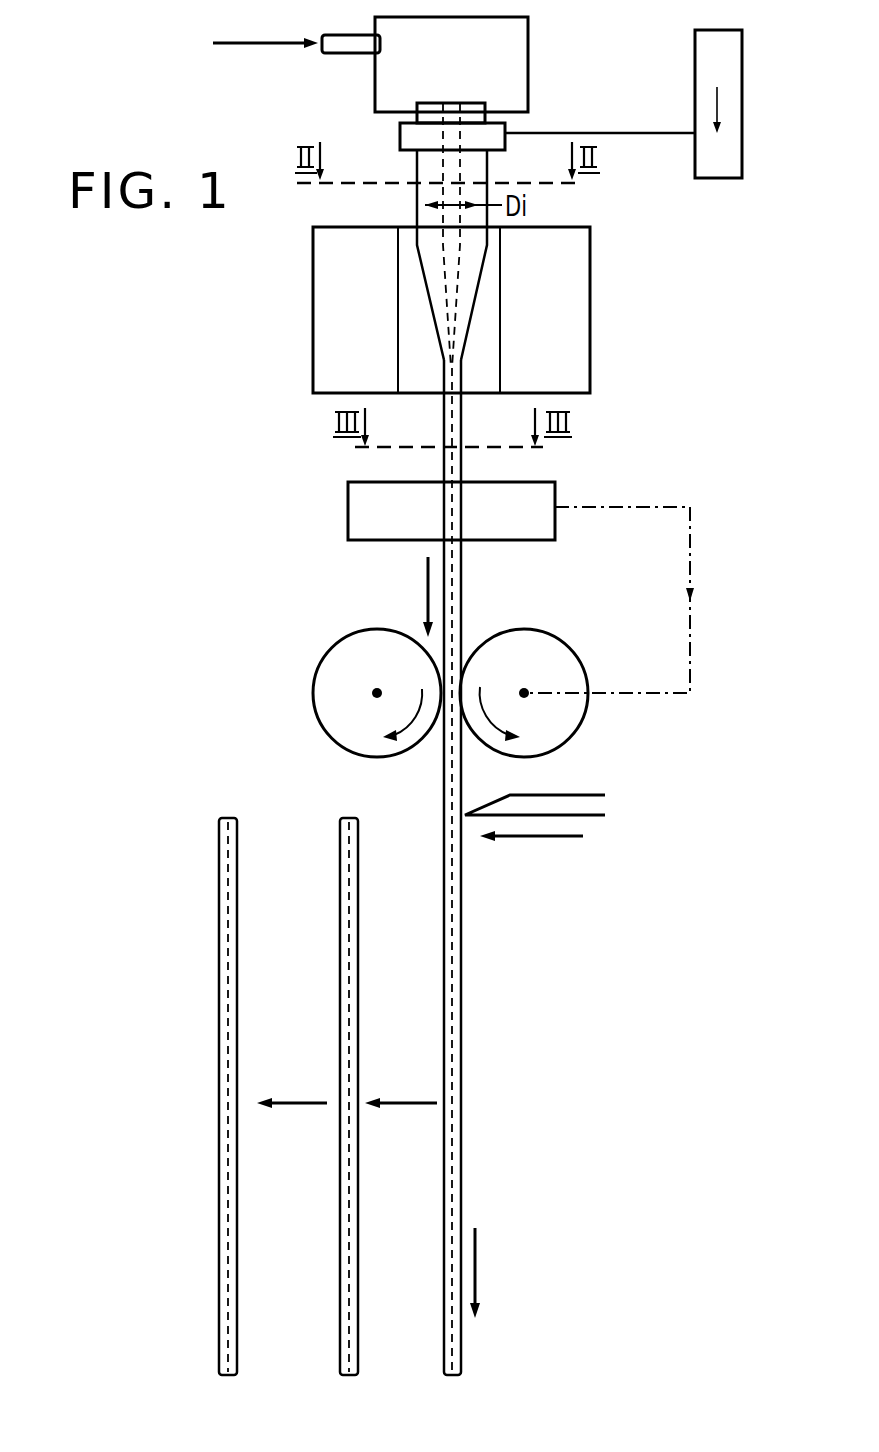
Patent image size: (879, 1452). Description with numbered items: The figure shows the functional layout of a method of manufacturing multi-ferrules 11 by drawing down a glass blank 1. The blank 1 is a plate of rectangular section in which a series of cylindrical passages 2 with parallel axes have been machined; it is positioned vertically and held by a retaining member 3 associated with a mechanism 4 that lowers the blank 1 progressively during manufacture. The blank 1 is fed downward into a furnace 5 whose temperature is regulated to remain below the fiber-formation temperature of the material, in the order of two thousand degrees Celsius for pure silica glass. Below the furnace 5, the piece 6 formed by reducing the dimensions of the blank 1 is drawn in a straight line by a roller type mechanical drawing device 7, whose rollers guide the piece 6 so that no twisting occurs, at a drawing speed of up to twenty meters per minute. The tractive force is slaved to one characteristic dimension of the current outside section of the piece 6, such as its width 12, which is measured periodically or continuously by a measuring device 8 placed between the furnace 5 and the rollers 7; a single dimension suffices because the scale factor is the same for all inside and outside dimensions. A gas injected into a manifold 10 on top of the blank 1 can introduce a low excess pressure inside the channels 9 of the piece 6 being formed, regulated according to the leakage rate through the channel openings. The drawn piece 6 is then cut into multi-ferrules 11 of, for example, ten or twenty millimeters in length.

The glass blank 1 is at (418, 164).
The cylindrical passages 2 is at (458, 112).
The retaining member 3 is at (402, 136).
The mechanism 4 is at (730, 62).
The furnace 5 is at (590, 298).
The piece 6 is at (463, 416).
The roller type mechanical drawing device 7 is at (557, 643).
The measuring device 8 is at (363, 510).
The channels 9 is at (453, 596).
The manifold 10 is at (520, 57).
The multi-ferrules 11 is at (222, 957).
The width 12 is at (573, 762).